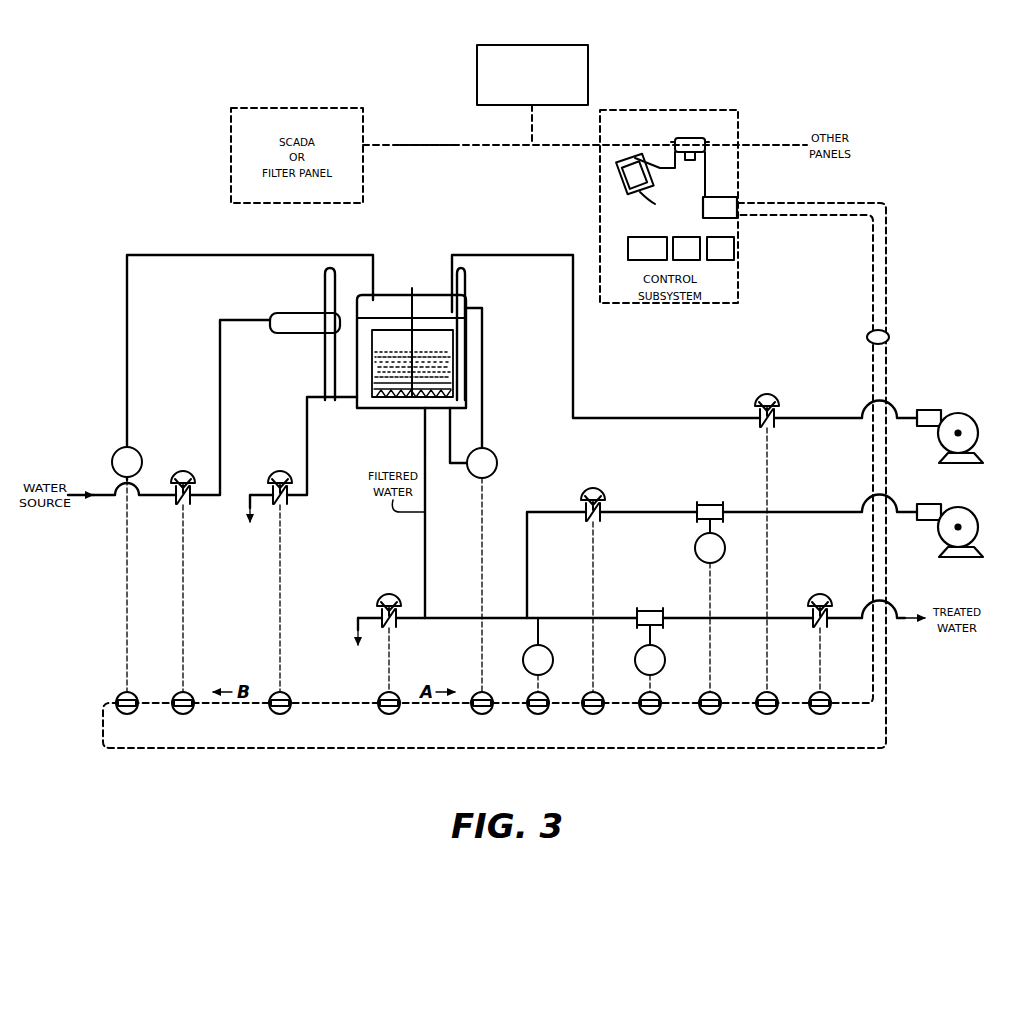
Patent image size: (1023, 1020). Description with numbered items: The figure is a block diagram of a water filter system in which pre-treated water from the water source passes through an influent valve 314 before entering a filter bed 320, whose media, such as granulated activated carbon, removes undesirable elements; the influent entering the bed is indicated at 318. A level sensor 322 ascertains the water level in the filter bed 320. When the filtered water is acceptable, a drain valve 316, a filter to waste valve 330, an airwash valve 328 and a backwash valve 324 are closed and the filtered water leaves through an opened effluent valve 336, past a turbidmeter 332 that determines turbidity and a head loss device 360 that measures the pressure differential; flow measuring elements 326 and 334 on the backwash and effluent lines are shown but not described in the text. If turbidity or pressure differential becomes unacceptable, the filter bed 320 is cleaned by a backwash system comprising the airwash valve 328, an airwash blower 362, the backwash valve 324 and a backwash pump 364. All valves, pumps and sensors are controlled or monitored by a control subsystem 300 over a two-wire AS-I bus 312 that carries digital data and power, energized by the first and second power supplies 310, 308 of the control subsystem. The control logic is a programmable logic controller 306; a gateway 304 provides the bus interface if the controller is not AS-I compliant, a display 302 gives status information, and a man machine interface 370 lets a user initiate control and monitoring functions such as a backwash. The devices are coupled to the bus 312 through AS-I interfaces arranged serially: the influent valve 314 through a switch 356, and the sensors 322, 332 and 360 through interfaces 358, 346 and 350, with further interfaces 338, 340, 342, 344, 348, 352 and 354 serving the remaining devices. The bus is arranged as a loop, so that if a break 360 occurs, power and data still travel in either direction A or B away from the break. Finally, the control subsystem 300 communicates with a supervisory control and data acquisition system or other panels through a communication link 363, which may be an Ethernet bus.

The control subsystem 300 is at (712, 112).
The display 302 is at (652, 202).
The gateway 304 is at (735, 198).
The programmable logic controller 306 is at (656, 237).
The power supply PS2 308 is at (708, 262).
The power supply PS1 310 is at (740, 247).
The AS-I bus 312 is at (866, 339).
The influent valve 314 is at (190, 504).
The drain valve 316 is at (287, 504).
The influent 318 is at (300, 334).
The filter bed 320 is at (387, 409).
The level sensor 322 is at (137, 450).
The backwash valve 324 is at (604, 481).
The backwash flow meter 326 is at (710, 502).
The airwash valve 328 is at (769, 386).
The filter to waste valve 330 is at (389, 592).
The turbidmeter 332 is at (551, 658).
The effluent flow meter 334 is at (650, 608).
The effluent valve 336 is at (820, 592).
The I/O terminal 338 is at (824, 715).
The I/O terminal 340 is at (770, 715).
The I/O terminal 342 is at (713, 715).
The I/O terminal 344 is at (653, 715).
The AS-I interface 346 is at (597, 715).
The I/O terminal 348 is at (541, 715).
The AS-I interface 350 is at (485, 715).
The I/O terminal 352 is at (393, 715).
The I/O terminal 354 is at (285, 715).
The switch 356 is at (187, 715).
The AS-I interface 358 is at (130, 715).
The head loss device 360 is at (494, 451).
The airwash blower 362 is at (943, 410).
The communication link 363 is at (455, 145).
The backwash pump 364 is at (943, 504).
The man machine interface 370 is at (477, 57).